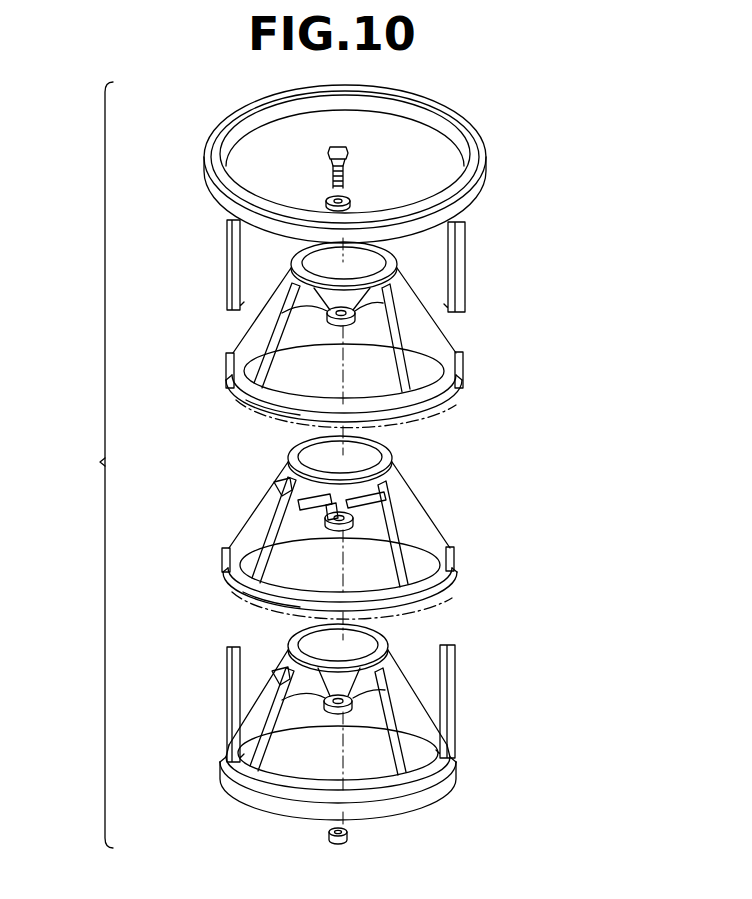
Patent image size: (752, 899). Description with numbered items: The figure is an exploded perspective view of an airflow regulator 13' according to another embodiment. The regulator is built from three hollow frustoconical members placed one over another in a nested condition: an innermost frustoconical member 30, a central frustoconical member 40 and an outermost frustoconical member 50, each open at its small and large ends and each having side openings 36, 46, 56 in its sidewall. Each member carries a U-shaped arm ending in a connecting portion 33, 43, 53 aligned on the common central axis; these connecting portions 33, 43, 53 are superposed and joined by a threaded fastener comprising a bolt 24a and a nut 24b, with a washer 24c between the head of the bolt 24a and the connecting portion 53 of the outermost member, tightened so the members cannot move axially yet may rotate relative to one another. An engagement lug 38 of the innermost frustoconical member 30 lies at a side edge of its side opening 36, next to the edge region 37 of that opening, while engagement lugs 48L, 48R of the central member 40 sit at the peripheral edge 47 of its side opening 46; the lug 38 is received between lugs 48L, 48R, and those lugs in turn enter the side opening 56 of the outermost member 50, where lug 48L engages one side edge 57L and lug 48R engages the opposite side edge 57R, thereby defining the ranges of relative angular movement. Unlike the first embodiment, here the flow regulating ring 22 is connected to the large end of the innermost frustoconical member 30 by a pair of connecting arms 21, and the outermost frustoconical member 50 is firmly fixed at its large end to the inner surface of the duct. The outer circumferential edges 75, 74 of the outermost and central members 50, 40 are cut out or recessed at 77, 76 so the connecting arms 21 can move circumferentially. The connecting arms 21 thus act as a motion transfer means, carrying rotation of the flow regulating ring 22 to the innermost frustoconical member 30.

The airflow regulator 13' is at (79, 465).
The flow regulating ring 22 is at (488, 168).
The connecting arms 21 is at (228, 244).
The bolt 24a is at (350, 152).
The washer 24c is at (352, 200).
The nut 24b is at (350, 835).
The outermost frustoconical member 50 is at (432, 340).
The side edge of the side opening 57L is at (268, 346).
The opposite side edge of the side opening 57R is at (425, 412).
The connecting portion 53 is at (345, 323).
The outer circumferential edge 75 is at (228, 374).
The cutout 77 is at (475, 405).
The side opening 56 is at (272, 407).
The central frustoconical member 40 is at (400, 508).
The peripheral edge of the side opening 47 is at (252, 545).
The engagement lug 48L is at (280, 488).
The engagement lug 48R is at (322, 512).
The connecting portion 43 is at (343, 526).
The outer circumferential edge 74 is at (224, 562).
The cutout 76 is at (455, 592).
The side opening 46 is at (268, 600).
The innermost frustoconical member 30 is at (408, 698).
The strut of lower conical member 37 is at (262, 742).
The engagement lug 38 is at (288, 680).
The connecting portion 33 is at (345, 708).
The side opening 36 is at (268, 802).